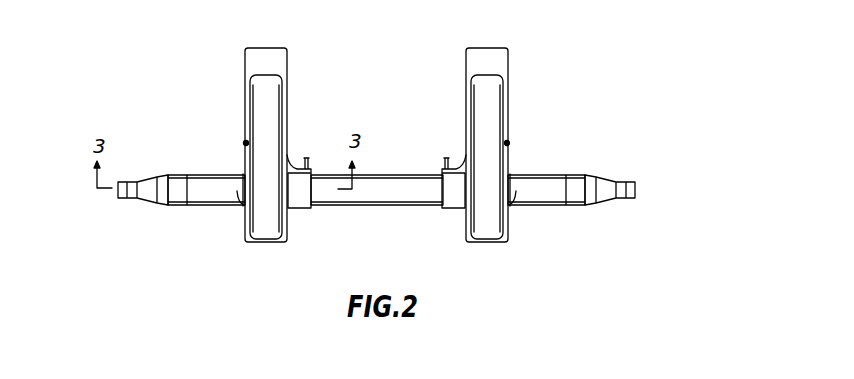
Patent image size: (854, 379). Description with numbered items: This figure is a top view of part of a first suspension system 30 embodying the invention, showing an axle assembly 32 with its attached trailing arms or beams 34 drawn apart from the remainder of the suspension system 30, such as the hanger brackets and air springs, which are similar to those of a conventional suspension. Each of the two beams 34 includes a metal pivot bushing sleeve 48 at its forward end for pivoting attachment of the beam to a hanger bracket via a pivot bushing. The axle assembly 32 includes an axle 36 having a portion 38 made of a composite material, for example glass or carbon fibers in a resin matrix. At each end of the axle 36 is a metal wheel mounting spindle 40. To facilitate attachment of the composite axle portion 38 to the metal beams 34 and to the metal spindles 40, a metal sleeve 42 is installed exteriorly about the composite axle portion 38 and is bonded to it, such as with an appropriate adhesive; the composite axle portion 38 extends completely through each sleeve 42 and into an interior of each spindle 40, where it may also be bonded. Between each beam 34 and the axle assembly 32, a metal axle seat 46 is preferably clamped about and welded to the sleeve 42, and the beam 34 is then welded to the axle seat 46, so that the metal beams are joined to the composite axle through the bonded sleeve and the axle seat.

The suspension system 30 is at (426, 153).
The axle assembly 32 is at (572, 166).
The trailing arms or beams 34 is at (245, 108).
The axle 36 is at (208, 207).
The composite axle portion 38 is at (381, 175).
The wheel mounting spindle 40 is at (133, 180).
The metal sleeve 42 is at (300, 209).
The axle seat 46 is at (242, 193).
The pivot bushing sleeve 48 is at (287, 65).